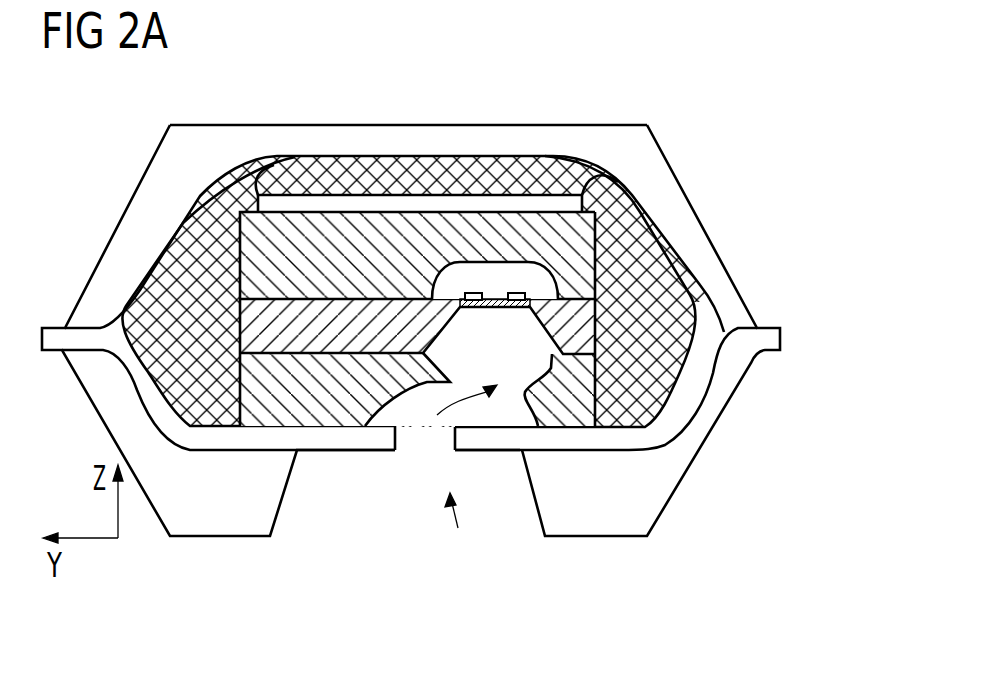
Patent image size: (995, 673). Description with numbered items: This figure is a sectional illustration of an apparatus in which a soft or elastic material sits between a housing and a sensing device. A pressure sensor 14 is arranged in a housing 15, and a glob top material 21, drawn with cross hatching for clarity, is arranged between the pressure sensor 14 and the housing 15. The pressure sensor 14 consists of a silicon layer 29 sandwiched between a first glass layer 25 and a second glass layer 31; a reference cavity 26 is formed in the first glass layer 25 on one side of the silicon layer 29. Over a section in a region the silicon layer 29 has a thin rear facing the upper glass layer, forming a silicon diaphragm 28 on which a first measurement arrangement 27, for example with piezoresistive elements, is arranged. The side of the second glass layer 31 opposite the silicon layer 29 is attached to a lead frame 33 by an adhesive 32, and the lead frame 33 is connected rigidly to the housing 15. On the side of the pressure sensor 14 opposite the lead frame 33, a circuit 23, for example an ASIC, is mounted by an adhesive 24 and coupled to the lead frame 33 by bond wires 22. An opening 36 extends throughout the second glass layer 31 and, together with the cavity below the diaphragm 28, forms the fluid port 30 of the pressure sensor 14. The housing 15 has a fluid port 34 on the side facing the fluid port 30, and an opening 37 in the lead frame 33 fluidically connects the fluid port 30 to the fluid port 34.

The pressure sensor 14 is at (270, 410).
The housing 15 is at (408, 138).
The glob top material 21 is at (488, 162).
The bond wires 22 is at (600, 170).
The circuit 23 is at (335, 203).
The adhesive 24 is at (590, 208).
The first glass layer 25 is at (585, 262).
The reference cavity 26 is at (450, 283).
The first measurement arrangement 27 is at (517, 307).
The silicon diaphragm 28 is at (493, 308).
The silicon layer 29 is at (588, 330).
The fluid port 30 is at (503, 357).
The second glass layer 31 is at (590, 397).
The adhesive 32 is at (567, 426).
The lead frame 33 is at (490, 452).
The fluid port 34 is at (469, 541).
The opening 36 is at (460, 418).
The opening 37 is at (455, 443).